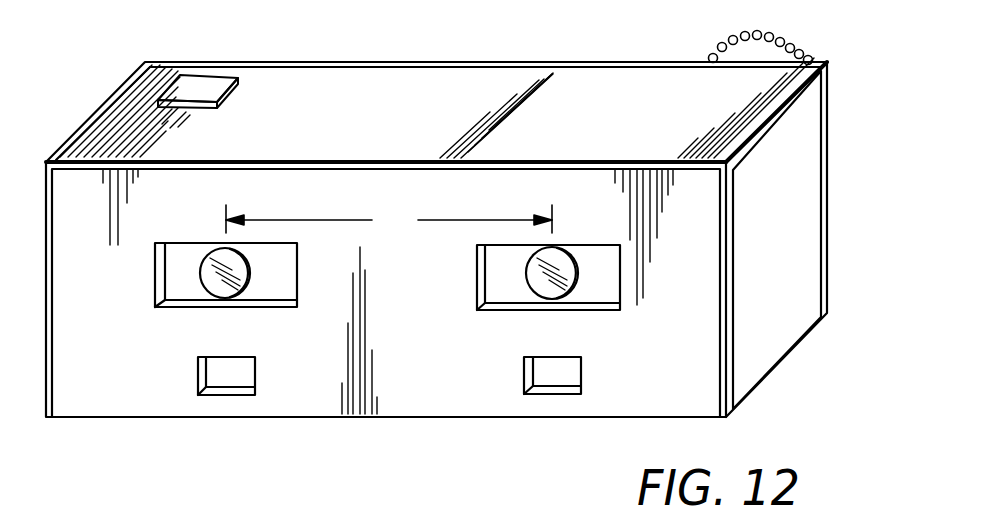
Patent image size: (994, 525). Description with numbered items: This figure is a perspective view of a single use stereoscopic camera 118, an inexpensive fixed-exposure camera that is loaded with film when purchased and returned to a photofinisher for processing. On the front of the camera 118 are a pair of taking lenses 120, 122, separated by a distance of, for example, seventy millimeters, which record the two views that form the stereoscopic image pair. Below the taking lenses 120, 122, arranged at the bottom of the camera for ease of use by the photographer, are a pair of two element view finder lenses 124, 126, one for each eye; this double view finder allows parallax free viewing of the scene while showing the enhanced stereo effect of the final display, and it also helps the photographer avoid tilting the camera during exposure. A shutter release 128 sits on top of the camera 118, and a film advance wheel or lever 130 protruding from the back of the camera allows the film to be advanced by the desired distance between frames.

The single use camera 118 is at (488, 52).
The taking lens 120 is at (255, 280).
The taking lens 122 is at (583, 285).
The view finder lens 124 is at (228, 373).
The view finder lens 126 is at (558, 375).
The shutter release 128 is at (203, 85).
The film advance wheel or lever 130 is at (716, 57).